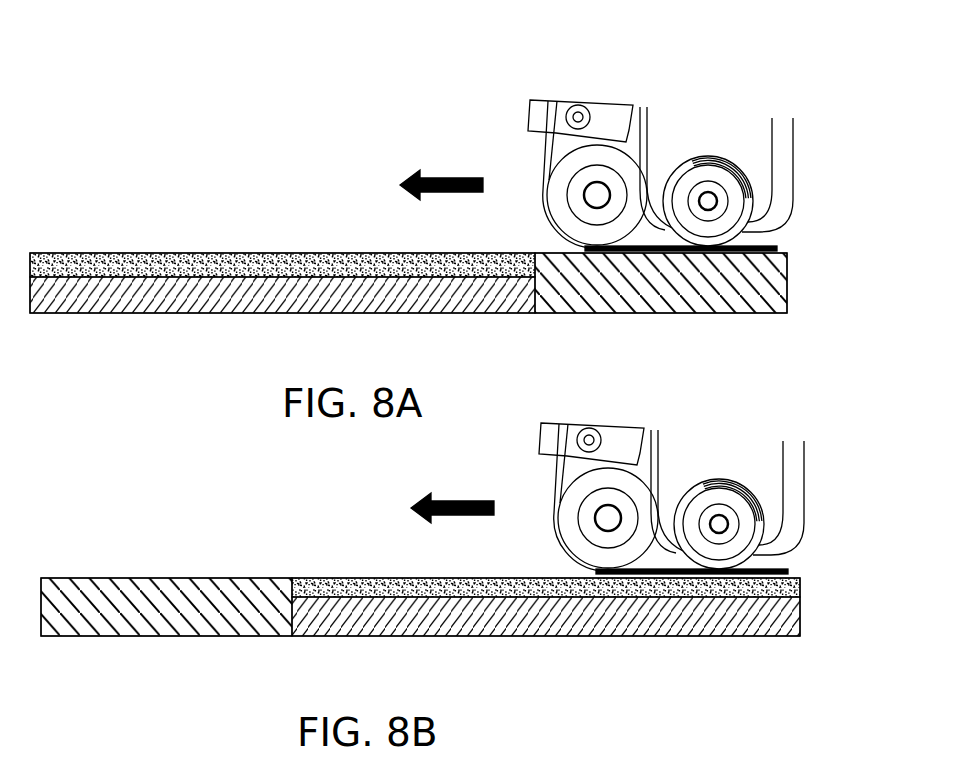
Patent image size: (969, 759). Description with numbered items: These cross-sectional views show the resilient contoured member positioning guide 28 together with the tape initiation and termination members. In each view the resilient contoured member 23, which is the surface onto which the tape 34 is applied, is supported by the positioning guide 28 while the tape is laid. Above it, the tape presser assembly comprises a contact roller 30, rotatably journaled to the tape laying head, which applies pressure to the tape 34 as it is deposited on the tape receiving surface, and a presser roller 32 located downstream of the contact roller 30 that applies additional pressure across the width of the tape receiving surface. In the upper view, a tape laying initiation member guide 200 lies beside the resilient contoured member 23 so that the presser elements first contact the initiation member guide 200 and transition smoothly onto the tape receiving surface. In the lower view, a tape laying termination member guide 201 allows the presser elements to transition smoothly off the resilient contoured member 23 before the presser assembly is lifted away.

In FIG. 8A, the resilient contoured member 23 is at (88, 262).
In FIG. 8B, the resilient contoured member 23 is at (800, 585).
In FIG. 8A, the resilient contoured member positioning guide 28 is at (166, 313).
In FIG. 8B, the resilient contoured member positioning guide 28 is at (800, 622).
In FIG. 8A, the contact roller 30 is at (563, 178).
In FIG. 8B, the contact roller 30 is at (547, 485).
In FIG. 8A, the presser roller 32 is at (715, 180).
In FIG. 8B, the presser roller 32 is at (719, 465).
In FIG. 8A, the tape 34 is at (778, 248).
In FIG. 8B, the tape 34 is at (758, 534).
In FIG. 8A, the tape laying initiation member guide 200 is at (757, 292).
In FIG. 8B, the tape laying termination member guide 201 is at (78, 608).